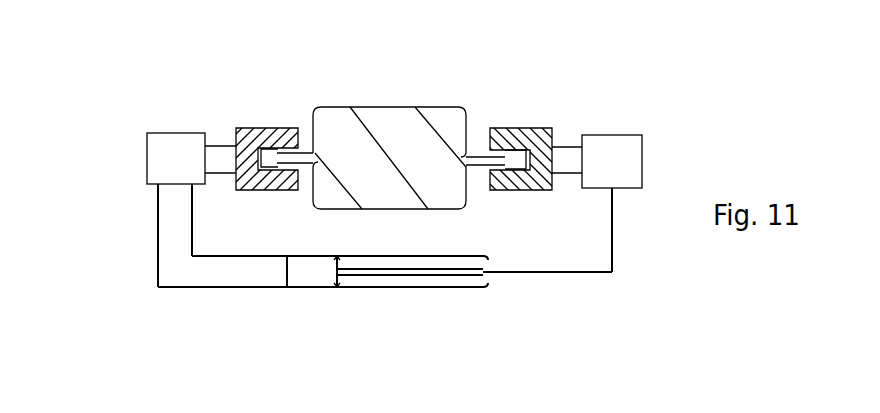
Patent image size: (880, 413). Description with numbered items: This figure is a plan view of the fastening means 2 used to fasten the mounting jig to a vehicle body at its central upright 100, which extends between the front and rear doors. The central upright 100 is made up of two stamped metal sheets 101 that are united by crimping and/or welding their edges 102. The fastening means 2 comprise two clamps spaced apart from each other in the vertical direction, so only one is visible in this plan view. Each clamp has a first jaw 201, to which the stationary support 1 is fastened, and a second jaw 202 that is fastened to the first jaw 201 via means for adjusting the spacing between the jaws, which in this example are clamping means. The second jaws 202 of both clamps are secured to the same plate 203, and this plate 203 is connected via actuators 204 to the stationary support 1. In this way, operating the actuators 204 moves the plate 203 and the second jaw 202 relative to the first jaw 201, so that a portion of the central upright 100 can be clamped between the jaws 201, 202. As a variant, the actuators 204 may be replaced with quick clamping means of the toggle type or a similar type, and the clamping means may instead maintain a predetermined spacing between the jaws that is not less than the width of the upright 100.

The stationary support 1 is at (172, 145).
The fastening means 2 is at (103, 280).
The central upright 100 is at (440, 111).
The stamped metal sheets 101 is at (390, 108).
The edges 102 is at (277, 150).
The first jaw 201 is at (245, 130).
The second jaw 202 is at (550, 127).
The plate 203 is at (623, 145).
The actuators 204 is at (367, 290).